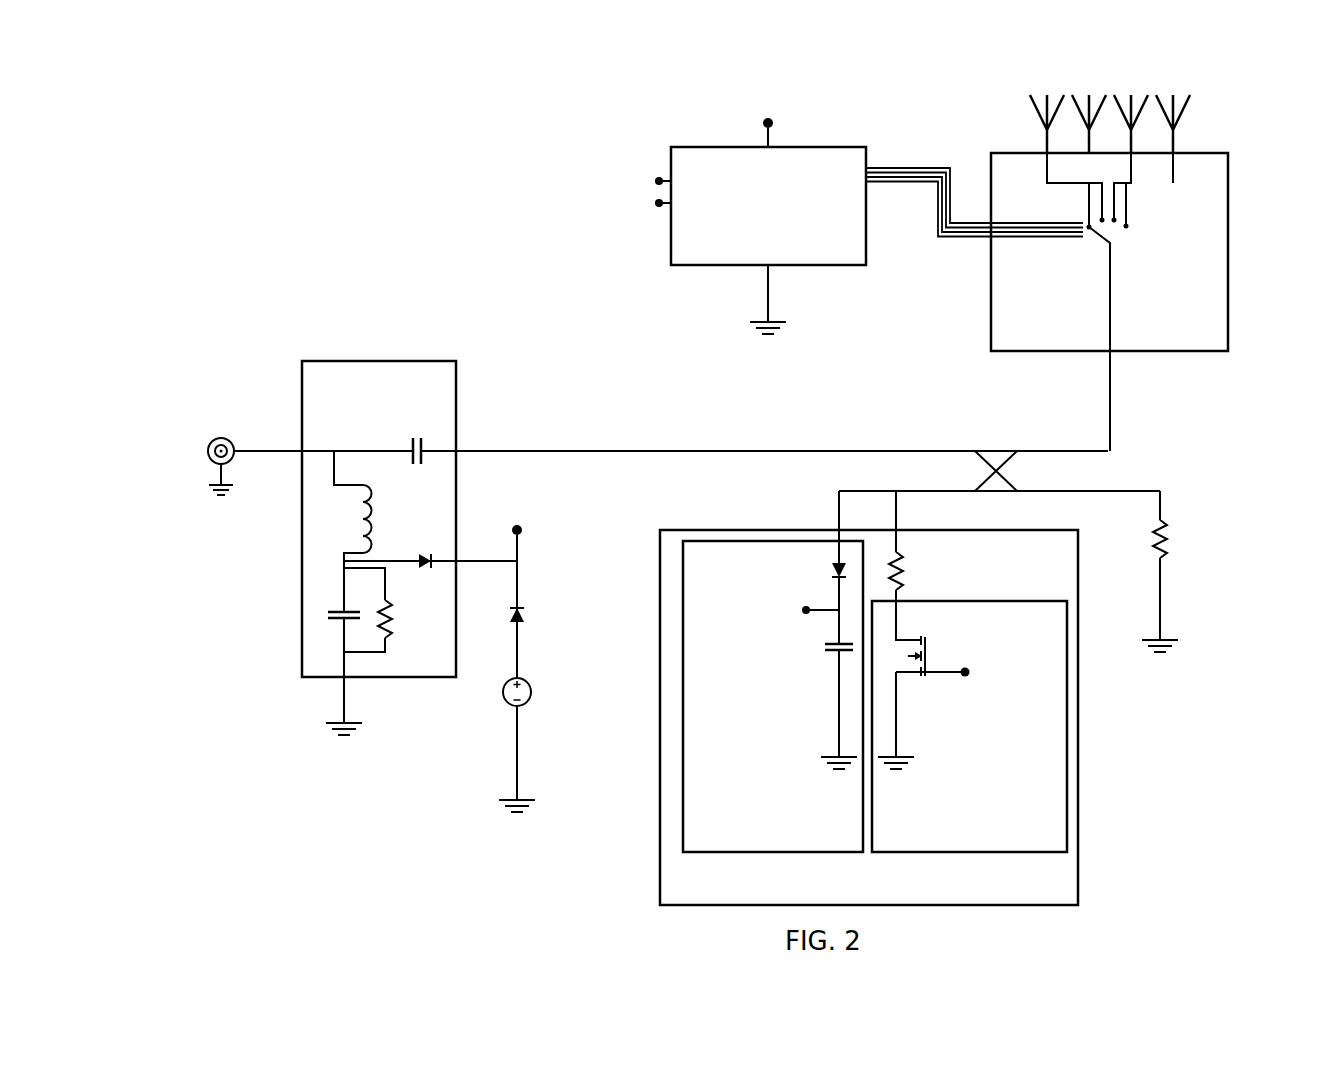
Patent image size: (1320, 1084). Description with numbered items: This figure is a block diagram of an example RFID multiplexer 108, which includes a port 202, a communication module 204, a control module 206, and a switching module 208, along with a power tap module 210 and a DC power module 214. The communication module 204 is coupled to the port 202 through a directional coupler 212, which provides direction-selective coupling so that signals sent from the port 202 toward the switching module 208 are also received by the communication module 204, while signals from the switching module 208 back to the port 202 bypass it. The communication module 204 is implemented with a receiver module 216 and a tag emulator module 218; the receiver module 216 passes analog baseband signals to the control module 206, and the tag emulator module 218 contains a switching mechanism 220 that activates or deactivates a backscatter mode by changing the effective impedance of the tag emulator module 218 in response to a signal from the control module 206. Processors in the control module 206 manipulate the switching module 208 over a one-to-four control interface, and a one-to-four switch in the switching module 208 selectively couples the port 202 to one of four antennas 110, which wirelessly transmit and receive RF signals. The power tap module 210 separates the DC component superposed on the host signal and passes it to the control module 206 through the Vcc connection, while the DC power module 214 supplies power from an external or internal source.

The RFID multiplexer 108 is at (296, 205).
The antennas 110 is at (1013, 129).
The port 202 is at (215, 440).
The communication module 204 is at (869, 698).
The control module 206 is at (792, 215).
The switching module 208 is at (1109, 302).
The power tap module 210 is at (409, 548).
The directional coupler 212 is at (1003, 479).
The DC power module 214 is at (529, 683).
The receiver module 216 is at (773, 671).
The tag emulator module 218 is at (969, 671).
The switching mechanism 220 is at (936, 644).